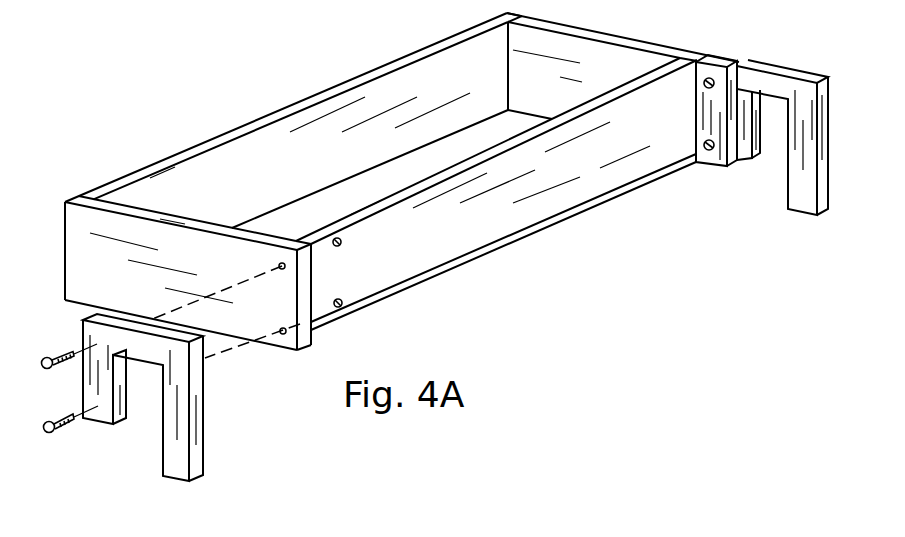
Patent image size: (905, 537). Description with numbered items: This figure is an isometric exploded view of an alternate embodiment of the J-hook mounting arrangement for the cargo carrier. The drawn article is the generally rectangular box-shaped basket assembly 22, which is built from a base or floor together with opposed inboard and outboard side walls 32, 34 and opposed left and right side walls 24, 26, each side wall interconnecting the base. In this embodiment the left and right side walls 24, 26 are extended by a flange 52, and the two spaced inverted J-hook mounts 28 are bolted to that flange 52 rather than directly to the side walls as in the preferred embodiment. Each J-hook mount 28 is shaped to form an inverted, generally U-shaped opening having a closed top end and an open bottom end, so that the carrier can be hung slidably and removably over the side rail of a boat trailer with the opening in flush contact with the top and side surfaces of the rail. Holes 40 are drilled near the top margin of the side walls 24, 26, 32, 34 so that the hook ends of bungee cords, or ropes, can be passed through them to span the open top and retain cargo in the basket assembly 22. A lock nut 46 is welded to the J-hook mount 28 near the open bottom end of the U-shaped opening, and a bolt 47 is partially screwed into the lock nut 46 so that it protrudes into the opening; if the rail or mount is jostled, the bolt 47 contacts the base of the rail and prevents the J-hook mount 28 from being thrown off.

The basket assembly 22 is at (214, 85).
The left side wall 24 is at (519, 107).
The right side wall 26 is at (86, 287).
The J-hook mount 28 is at (182, 445).
The inboard side wall 32 is at (603, 152).
The outboard side wall 34 is at (461, 74).
The holes 40 is at (280, 264).
The lock nut 46 is at (341, 237).
The bolt 47 is at (46, 357).
The flange 52 is at (717, 100).